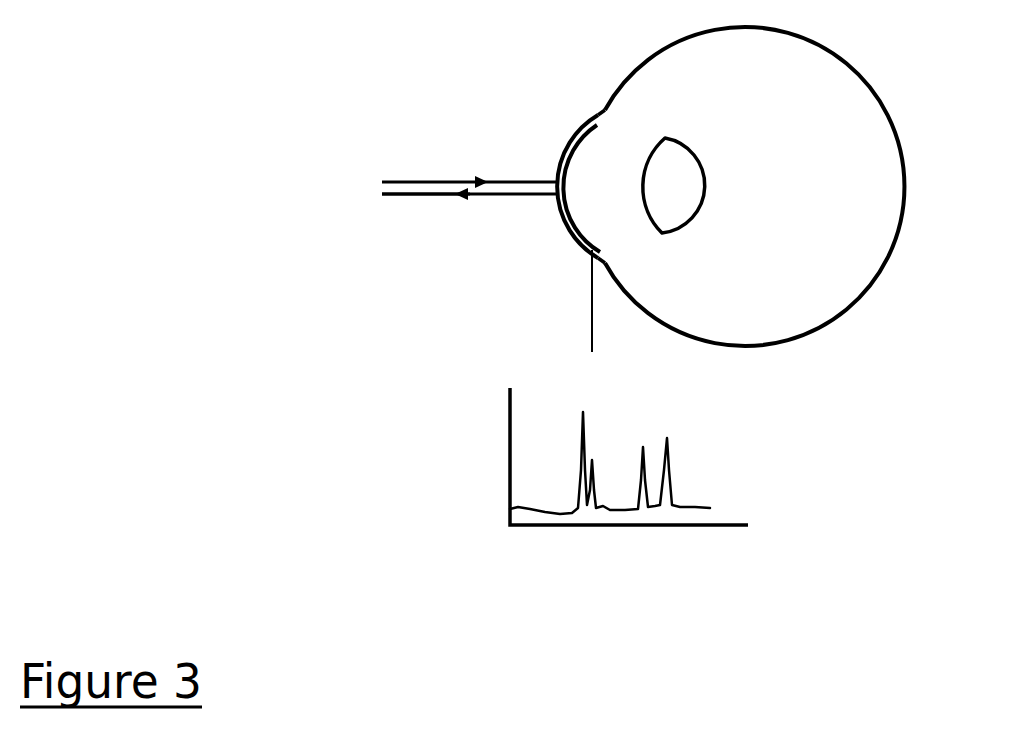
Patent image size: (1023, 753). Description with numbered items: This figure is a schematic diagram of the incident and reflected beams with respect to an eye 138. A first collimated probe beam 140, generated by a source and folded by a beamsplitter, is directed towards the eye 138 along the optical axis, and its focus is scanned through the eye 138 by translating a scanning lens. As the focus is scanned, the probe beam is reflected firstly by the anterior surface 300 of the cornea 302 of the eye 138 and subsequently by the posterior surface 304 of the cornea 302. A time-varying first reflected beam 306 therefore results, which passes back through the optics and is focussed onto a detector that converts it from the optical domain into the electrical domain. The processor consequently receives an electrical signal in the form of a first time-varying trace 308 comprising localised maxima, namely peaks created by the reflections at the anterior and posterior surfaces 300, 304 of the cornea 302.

The eye 138 is at (902, 172).
The first collimated probe beam 140 is at (497, 180).
The anterior surface of the cornea 300 is at (582, 125).
The cornea 302 is at (577, 240).
The posterior surface of the cornea 304 is at (592, 319).
The first reflected beam 306 is at (415, 196).
The first time-varying trace 308 is at (558, 527).